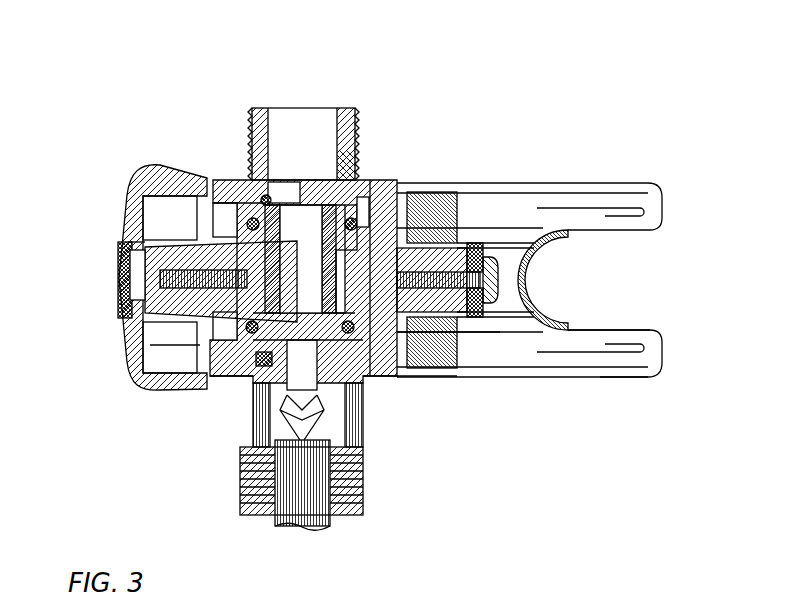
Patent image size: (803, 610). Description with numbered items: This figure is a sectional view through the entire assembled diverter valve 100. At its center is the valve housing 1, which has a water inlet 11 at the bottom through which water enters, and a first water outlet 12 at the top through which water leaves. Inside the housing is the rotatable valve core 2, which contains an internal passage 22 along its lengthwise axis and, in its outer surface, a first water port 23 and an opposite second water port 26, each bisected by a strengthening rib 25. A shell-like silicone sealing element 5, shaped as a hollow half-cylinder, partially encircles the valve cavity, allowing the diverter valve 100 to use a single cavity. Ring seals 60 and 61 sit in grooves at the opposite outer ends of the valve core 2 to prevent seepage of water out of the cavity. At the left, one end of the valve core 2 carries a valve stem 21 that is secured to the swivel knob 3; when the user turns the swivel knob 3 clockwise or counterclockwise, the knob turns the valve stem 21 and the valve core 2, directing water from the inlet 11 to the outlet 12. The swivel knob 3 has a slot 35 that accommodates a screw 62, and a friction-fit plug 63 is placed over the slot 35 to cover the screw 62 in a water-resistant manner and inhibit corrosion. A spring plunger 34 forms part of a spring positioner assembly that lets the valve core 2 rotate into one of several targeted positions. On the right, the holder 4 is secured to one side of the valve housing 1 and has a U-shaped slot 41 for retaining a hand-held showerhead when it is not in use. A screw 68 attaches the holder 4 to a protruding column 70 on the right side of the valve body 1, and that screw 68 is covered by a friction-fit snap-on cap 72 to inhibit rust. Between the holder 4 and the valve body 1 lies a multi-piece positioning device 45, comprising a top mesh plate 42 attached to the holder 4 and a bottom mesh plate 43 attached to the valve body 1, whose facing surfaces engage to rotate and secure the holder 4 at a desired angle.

The diverter valve 100 is at (508, 108).
The valve housing 1 is at (423, 380).
The valve core 2 is at (243, 383).
The swivel knob 3 is at (126, 207).
The holder 4 is at (588, 182).
The silicone sealing element 5 is at (355, 210).
The water inlet 11 is at (365, 490).
The first water outlet 12 is at (303, 122).
The valve stem 21 is at (215, 380).
The internal passage 22 is at (263, 195).
The first water port 23 is at (307, 180).
The rib 25 is at (300, 235).
The second water port 26 is at (363, 390).
The spring plunger 34 is at (165, 345).
The slot 35 is at (130, 245).
The U-shaped slot 41 is at (635, 282).
The top mesh plate 42 is at (547, 325).
The bottom mesh plate 43 is at (503, 340).
The positioning device 45 is at (557, 438).
The ring seal 60 is at (392, 215).
The ring seal 61 is at (297, 267).
The screw 62 is at (137, 295).
The friction-fit plug 63 is at (120, 268).
The screw 68 is at (533, 307).
The protruding column 70 is at (435, 248).
The snap-on plug or cap 72 is at (532, 285).